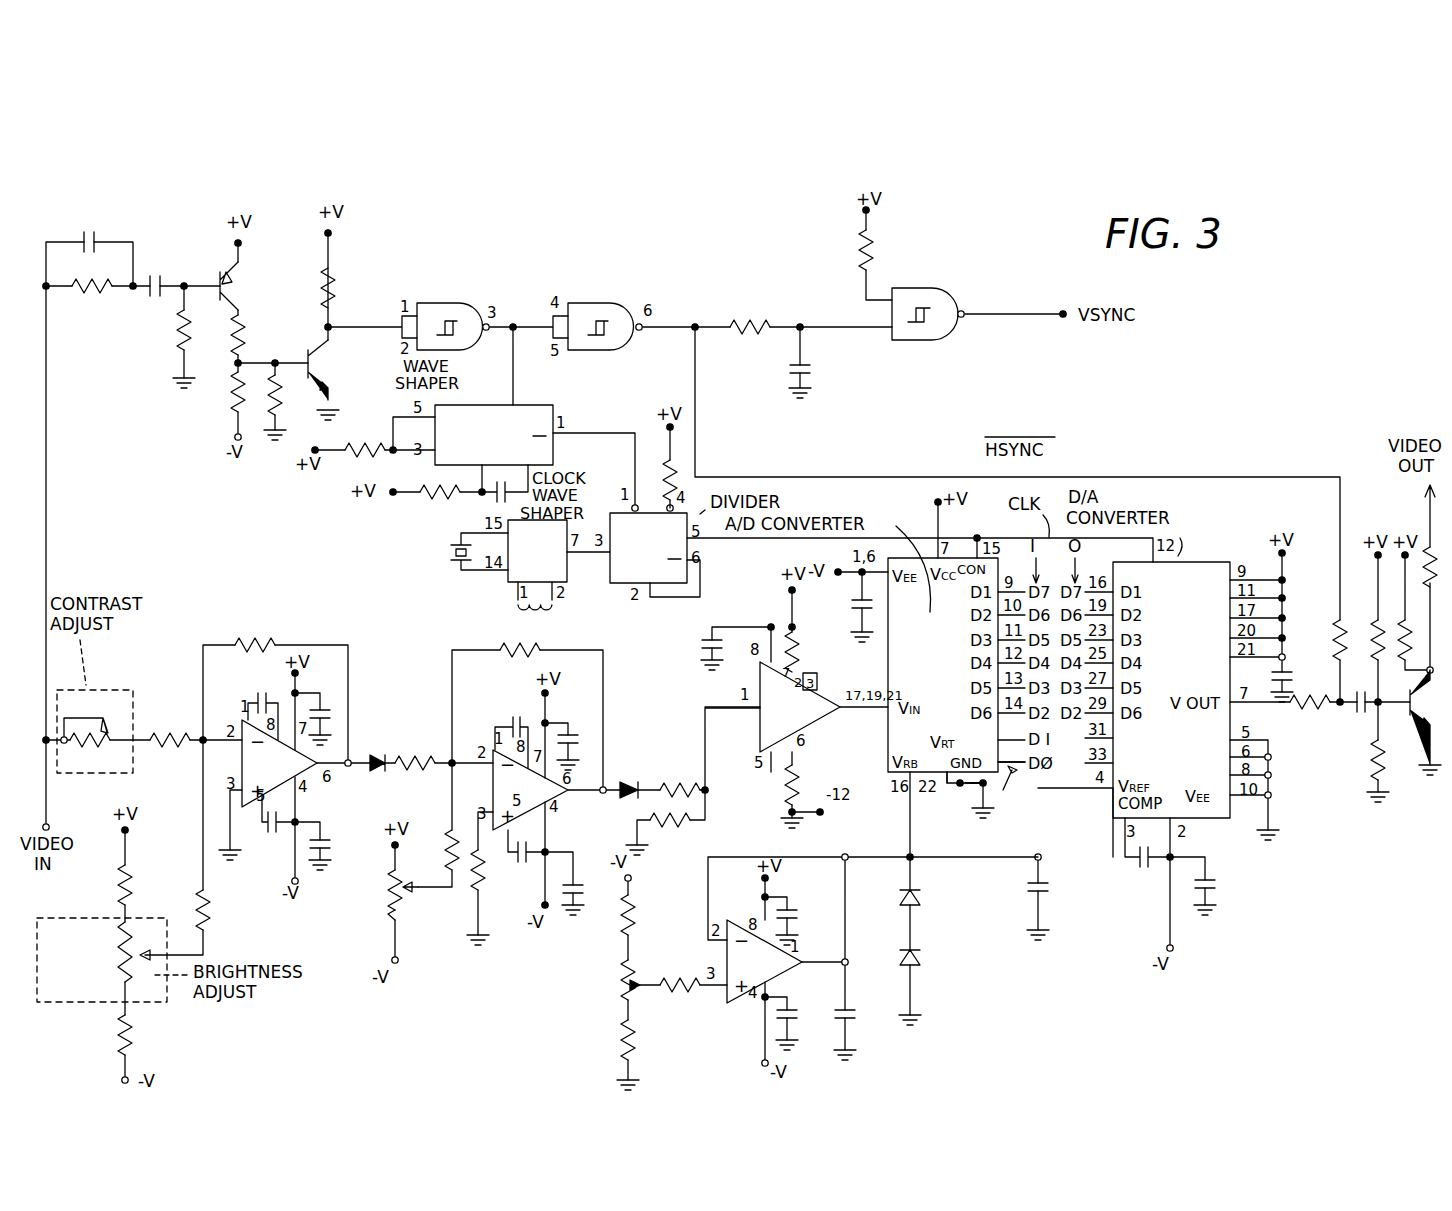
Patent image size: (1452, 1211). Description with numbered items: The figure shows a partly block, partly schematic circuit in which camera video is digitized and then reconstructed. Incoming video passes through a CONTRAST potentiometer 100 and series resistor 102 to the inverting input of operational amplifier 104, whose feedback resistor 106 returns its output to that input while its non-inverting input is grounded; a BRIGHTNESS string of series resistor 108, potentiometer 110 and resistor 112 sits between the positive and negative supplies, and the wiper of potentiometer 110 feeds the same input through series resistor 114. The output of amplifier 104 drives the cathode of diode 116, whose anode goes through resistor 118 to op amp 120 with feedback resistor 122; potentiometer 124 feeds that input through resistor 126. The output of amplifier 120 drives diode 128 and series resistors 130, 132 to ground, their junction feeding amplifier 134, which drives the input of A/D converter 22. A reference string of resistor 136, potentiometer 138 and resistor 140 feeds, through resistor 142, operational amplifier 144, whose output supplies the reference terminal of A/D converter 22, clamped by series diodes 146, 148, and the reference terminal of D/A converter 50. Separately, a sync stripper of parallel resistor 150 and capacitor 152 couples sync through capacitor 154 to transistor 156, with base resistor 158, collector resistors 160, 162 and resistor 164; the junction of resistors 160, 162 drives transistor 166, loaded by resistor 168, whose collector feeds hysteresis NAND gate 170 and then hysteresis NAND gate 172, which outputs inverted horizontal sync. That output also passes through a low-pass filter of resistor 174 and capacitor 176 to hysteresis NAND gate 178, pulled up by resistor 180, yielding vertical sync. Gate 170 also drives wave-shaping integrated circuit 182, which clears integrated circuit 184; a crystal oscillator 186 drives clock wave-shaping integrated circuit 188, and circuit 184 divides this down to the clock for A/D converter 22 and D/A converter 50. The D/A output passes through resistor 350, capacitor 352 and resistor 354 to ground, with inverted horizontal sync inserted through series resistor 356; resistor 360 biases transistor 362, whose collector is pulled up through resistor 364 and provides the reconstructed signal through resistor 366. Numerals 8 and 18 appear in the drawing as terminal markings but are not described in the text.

The D/A converter 50 is at (1200, 572).
The CONTRAST potentiometer 100 is at (113, 688).
The series resistor 102 is at (158, 740).
The operational amplifier 104 is at (298, 780).
The feedback resistor 106 is at (258, 640).
The series resistor 108 is at (133, 880).
The potentiometer 110 is at (82, 915).
The resistor 112 is at (133, 1027).
The series resistor 114 is at (208, 900).
The diode 116 is at (372, 756).
The series resistor 118 is at (405, 757).
The op amp 120 is at (528, 800).
The feedback resistor 122 is at (530, 650).
The potentiometer 124 is at (388, 890).
The series resistor 126 is at (448, 838).
The diode 128 is at (628, 782).
The series resistor 130 is at (670, 782).
The series resistor 132 is at (665, 830).
The amplifier 134 is at (805, 725).
The resistor 136 is at (620, 920).
The potentiometer 138 is at (622, 978).
The resistor 140 is at (620, 1035).
The series resistor 142 is at (688, 990).
The operational amplifier 144 is at (735, 958).
The diode 146 is at (915, 963).
The diode 148 is at (915, 905).
The resistor 150 is at (100, 290).
The capacitor 152 is at (97, 241).
The capacitor 154 is at (162, 280).
The transistor 156 is at (234, 296).
The resistor 158 is at (176, 343).
The resistor 160 is at (244, 333).
The resistor 162 is at (232, 392).
The resistor 164 is at (282, 396).
The transistor 166 is at (330, 365).
The resistor 168 is at (335, 290).
The hysteresis NAND gate 170 is at (465, 303).
The hysteresis NAND gate 172 is at (604, 300).
The resistor 174 is at (740, 318).
The capacitor 176 is at (812, 372).
The hysteresis NAND gate 178 is at (925, 288).
The resistor 180 is at (855, 250).
The wave-shaping integrated circuit 182 is at (553, 405).
The integrated circuit 184 is at (625, 560).
The crystal oscillator 186 is at (455, 570).
The clock wave-shaping integrated circuit 188 is at (510, 580).
The resistor 350 is at (1318, 712).
The capacitor 352 is at (1352, 715).
The resistor 354 is at (1372, 768).
The series resistor 356 is at (1337, 630).
The resistor 360 is at (1373, 655).
The transistor 362 is at (1403, 722).
The series resistor 364 is at (1403, 618).
The resistor 366 is at (1425, 545).
The reference signal input 8 is at (958, 780).
The ground connection 18 is at (980, 785).
The A/D converter 22 is at (1011, 783).